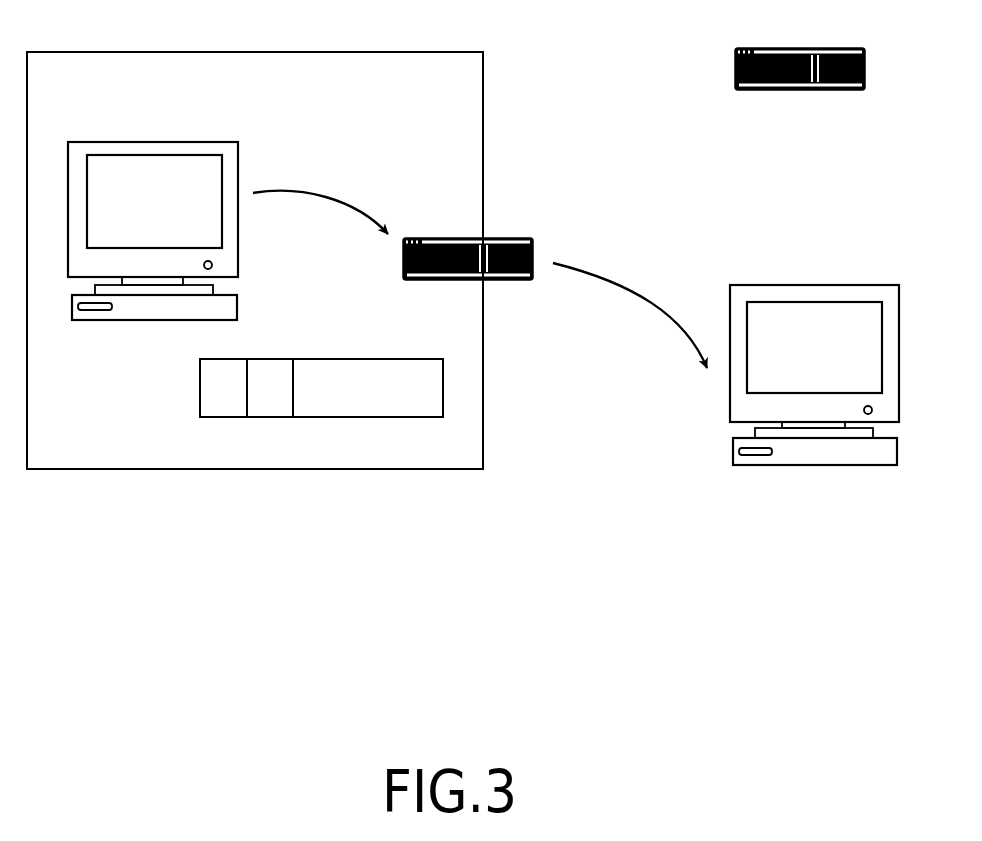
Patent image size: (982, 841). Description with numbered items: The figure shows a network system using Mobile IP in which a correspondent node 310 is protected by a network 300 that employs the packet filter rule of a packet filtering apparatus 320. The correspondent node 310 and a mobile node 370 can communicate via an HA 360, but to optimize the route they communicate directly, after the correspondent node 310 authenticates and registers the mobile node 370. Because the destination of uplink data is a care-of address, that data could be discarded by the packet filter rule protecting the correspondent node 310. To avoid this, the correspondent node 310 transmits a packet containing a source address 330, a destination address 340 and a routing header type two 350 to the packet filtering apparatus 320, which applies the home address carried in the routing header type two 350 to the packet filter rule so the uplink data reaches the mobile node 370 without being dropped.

The network 300 is at (258, 52).
The correspondent node 310 is at (156, 142).
The packet filtering apparatus 320 is at (507, 238).
The source address 330 is at (223, 417).
The destination address 340 is at (273, 417).
The routing header type #2 350 is at (367, 417).
The HA 360 is at (805, 48).
The mobile node 370 is at (817, 285).